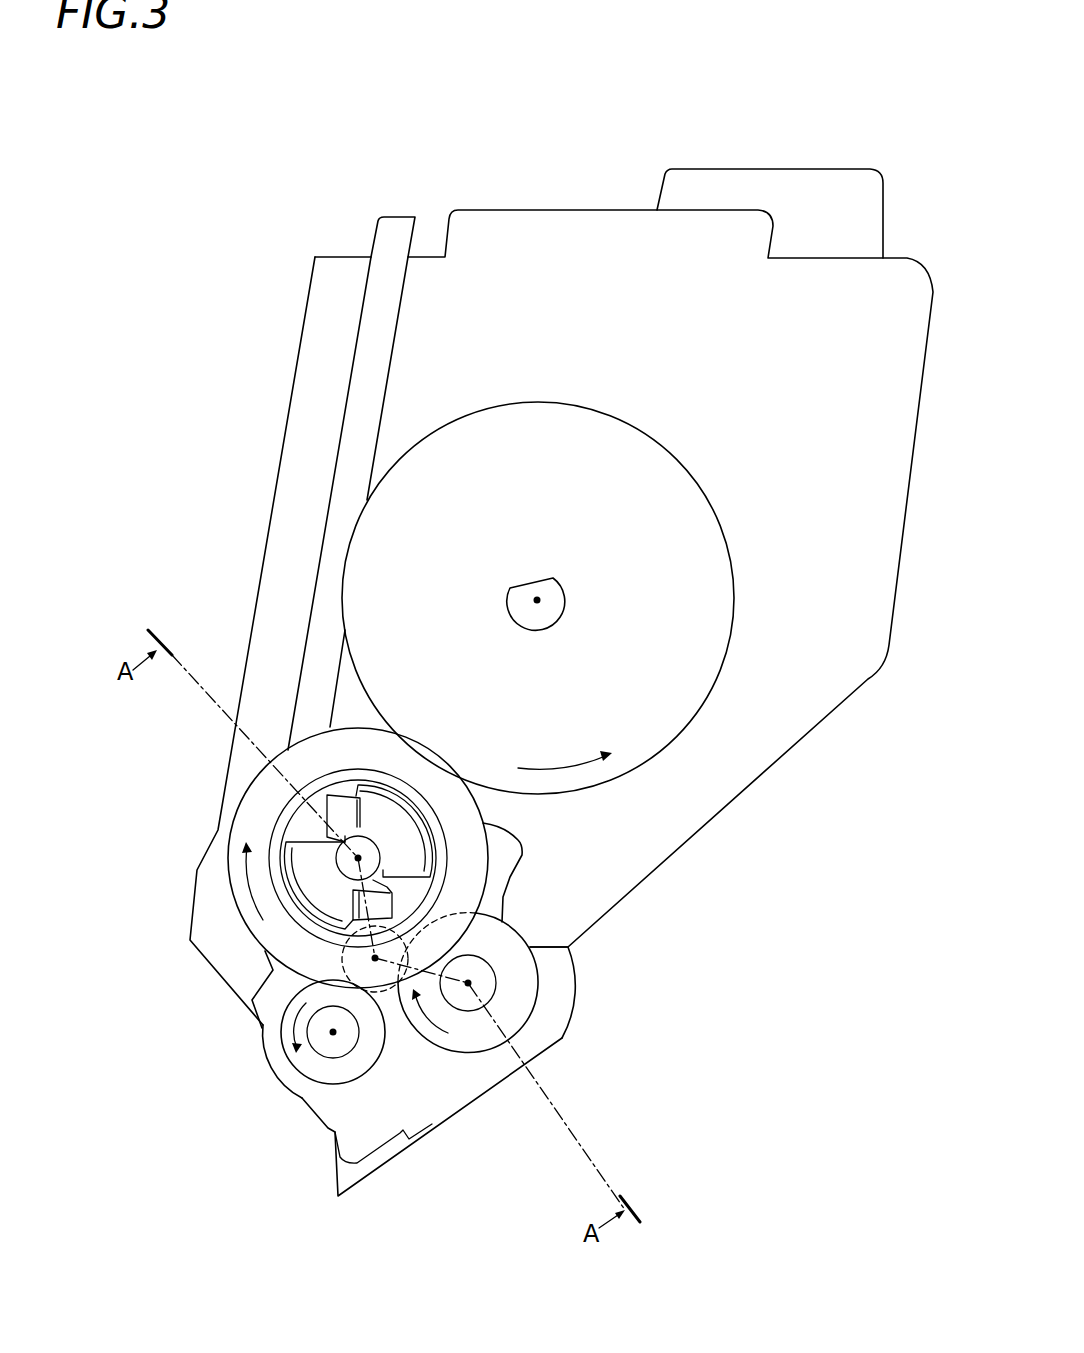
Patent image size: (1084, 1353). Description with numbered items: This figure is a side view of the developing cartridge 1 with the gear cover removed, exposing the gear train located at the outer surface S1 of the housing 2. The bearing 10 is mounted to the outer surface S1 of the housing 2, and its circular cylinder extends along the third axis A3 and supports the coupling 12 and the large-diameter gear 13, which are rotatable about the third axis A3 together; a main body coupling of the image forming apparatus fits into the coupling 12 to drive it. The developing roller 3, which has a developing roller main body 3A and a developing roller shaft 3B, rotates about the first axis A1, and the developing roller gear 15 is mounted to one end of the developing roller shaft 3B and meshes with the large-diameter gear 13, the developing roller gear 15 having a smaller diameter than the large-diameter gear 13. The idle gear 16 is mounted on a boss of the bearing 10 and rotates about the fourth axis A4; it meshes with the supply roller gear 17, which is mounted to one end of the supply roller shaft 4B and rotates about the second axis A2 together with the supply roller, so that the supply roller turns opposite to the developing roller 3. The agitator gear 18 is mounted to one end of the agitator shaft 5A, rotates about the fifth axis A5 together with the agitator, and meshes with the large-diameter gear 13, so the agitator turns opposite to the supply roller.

The developing cartridge 1 is at (608, 1314).
The housing 2 is at (469, 252).
The outer surface of the housing S1 is at (550, 258).
The agitator gear 18 is at (645, 460).
The agitator shaft 5A is at (555, 596).
The fifth axis A5 is at (540, 605).
The large-diameter gear 13 is at (280, 743).
The coupling 12 is at (287, 803).
The third axis A3 is at (358, 858).
The fourth axis A4 is at (375, 958).
The idle gear 16 is at (394, 1008).
The supply roller gear 17 is at (550, 975).
The supply roller shaft 4B is at (497, 983).
The second axis A2 is at (468, 985).
The bearing 10 is at (471, 1109).
The developing roller gear 15 is at (360, 1093).
The developing roller 3 is at (262, 1086).
The developing roller main body 3A is at (265, 1050).
The developing roller shaft 3B is at (335, 1045).
The first axis A1 is at (333, 1032).